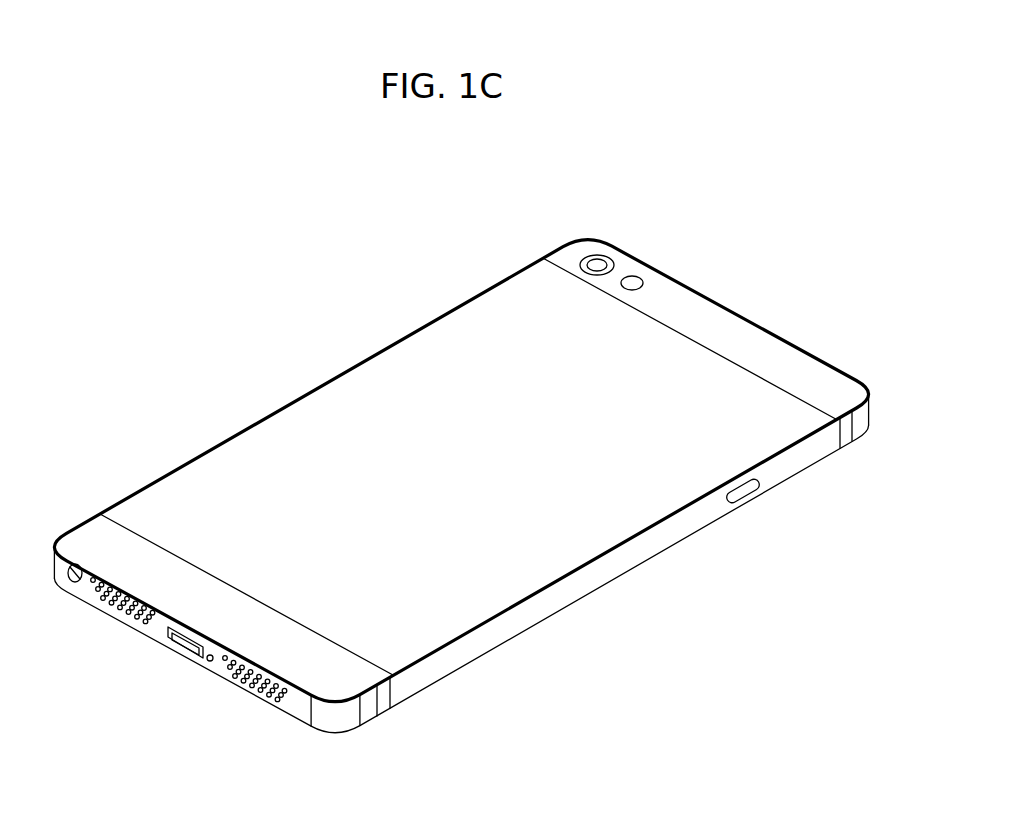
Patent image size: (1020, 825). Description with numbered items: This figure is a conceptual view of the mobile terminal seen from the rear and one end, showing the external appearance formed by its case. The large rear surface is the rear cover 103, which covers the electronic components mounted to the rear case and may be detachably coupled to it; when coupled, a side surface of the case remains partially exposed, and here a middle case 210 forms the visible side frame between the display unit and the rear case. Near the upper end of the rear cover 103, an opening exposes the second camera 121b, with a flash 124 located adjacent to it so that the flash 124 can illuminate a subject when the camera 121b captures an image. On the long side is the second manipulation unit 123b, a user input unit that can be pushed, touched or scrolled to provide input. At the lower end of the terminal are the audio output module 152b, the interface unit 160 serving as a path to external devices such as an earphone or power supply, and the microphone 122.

The rear cover 103 is at (205, 480).
The second camera 121b is at (602, 256).
The flash 124 is at (633, 276).
The second manipulation unit 123b is at (740, 502).
The audio output module 152b is at (90, 588).
The interface unit 160 is at (183, 652).
The microphone 122 is at (210, 663).
The middle case 210 is at (513, 627).